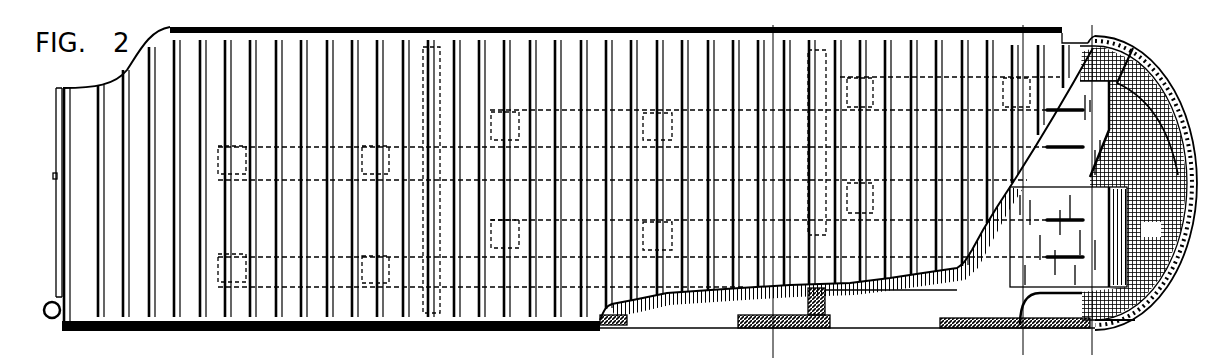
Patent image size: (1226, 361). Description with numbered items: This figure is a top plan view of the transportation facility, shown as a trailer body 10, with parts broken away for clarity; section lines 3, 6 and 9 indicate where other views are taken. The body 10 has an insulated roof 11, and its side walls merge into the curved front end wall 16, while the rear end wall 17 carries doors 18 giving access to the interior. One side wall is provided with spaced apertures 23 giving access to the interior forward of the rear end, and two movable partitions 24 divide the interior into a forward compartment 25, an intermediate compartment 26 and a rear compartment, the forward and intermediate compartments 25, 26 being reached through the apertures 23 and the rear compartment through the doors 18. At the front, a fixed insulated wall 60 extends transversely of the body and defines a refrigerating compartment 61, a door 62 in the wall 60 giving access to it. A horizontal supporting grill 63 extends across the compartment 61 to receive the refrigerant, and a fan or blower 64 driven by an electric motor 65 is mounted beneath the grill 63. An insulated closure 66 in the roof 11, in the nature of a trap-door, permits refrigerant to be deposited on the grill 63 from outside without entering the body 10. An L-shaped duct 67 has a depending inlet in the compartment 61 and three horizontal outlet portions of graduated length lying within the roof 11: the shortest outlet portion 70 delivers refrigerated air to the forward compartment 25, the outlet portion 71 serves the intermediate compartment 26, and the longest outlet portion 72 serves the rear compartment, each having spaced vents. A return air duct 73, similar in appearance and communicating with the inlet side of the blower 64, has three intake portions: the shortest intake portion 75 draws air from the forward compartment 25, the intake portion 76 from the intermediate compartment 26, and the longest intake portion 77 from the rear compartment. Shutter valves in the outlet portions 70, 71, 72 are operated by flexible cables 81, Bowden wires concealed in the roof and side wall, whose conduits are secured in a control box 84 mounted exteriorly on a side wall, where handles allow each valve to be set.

The section line 3- 3 is at (1003, 32).
The section line 6- 6 is at (793, 30).
The section line 9- 9 is at (1080, 32).
The trailer body 10 is at (377, 344).
The roof 11 is at (217, 314).
The front end wall 16 is at (1163, 292).
The rear end wall 17 is at (62, 247).
The doors 18 is at (57, 188).
The apertures 23 is at (625, 329).
The movable partitions 24 is at (825, 303).
The forward compartment 25 is at (912, 311).
The intermediate compartment 26 is at (713, 310).
The fixed insulated wall 60 is at (1075, 206).
The refrigerating compartment 61 is at (1158, 236).
The door 62 is at (1062, 175).
The supporting grill 63 is at (1165, 90).
The fan or blower 64 is at (1157, 170).
The electric motor 65 is at (1130, 318).
The insulated closure 66 is at (1153, 358).
The L-shaped duct 67 is at (1172, 274).
The outlet portion 70 is at (873, 201).
The outlet portion 71 is at (491, 234).
The outlet portion 72 is at (238, 253).
The return air duct 73 is at (1132, 58).
The intake portion 75 is at (853, 78).
The intake portion 76 is at (717, 100).
The intake portion 77 is at (238, 176).
The flexible cables 81 is at (1018, 322).
The control box 84 is at (1036, 305).